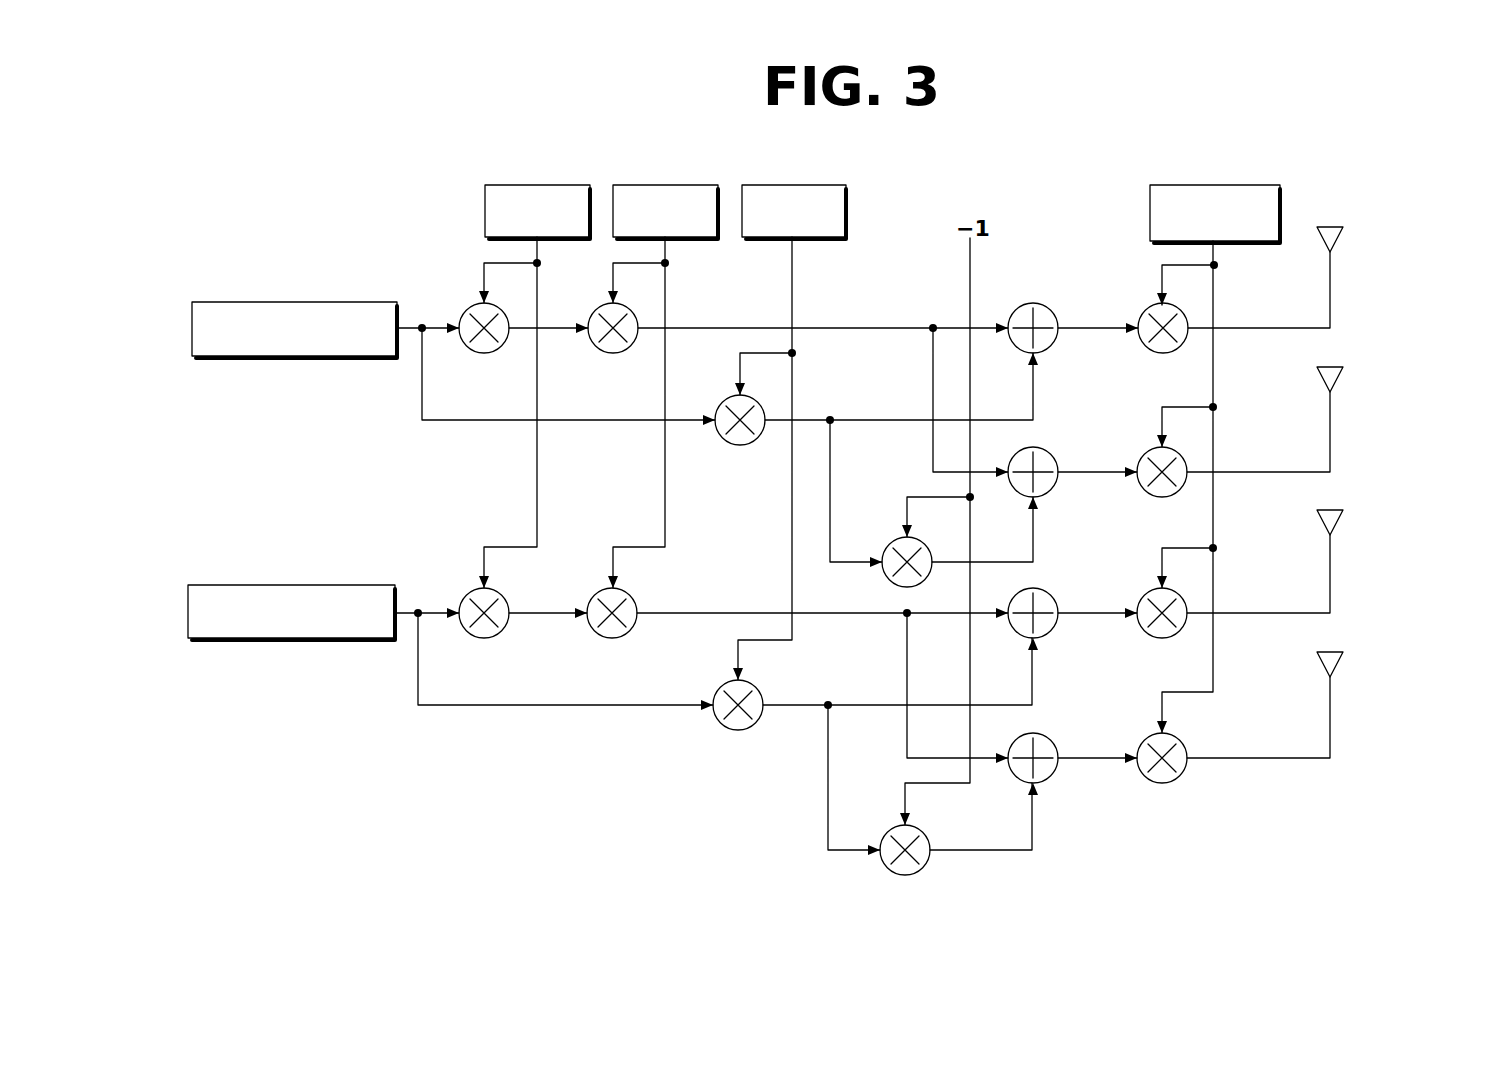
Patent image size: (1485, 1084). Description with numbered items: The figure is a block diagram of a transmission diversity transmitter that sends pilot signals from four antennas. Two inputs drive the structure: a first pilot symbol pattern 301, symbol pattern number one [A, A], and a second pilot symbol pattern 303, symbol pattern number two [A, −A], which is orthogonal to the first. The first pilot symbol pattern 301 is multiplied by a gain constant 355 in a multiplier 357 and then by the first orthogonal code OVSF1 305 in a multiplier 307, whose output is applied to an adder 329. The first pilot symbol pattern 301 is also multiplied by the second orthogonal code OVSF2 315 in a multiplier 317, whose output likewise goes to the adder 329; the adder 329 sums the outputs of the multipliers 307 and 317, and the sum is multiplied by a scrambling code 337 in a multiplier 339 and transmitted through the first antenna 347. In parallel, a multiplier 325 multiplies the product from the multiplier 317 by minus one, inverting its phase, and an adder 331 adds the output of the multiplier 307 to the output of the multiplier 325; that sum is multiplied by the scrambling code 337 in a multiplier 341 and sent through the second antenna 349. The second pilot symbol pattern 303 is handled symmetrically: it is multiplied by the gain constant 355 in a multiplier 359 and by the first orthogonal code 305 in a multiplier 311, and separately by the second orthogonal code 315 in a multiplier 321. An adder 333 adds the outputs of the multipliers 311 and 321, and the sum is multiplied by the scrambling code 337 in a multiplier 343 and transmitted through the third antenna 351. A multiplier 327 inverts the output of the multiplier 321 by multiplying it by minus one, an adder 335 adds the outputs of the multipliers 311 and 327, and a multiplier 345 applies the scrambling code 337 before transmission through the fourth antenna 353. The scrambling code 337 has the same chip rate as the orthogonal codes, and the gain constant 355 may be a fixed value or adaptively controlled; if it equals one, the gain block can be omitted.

The first pilot symbol pattern 301 is at (293, 302).
The second pilot symbol pattern 303 is at (288, 584).
The OVSF1 orthogonal code 305 is at (665, 184).
The multiplier 307 is at (594, 309).
The multiplier 311 is at (594, 594).
The OVSF2 orthogonal code 315 is at (793, 184).
The multiplier 317 is at (722, 401).
The multiplier 321 is at (720, 687).
The multiplier 325 is at (887, 544).
The multiplier 327 is at (886, 832).
The adder 329 is at (1053, 309).
The adder 331 is at (1055, 452).
The adder 333 is at (1053, 594).
The adder 335 is at (1053, 738).
The scrambling code 337 is at (1214, 184).
The multiplier 339 is at (1143, 309).
The multiplier 341 is at (1143, 452).
The multiplier 343 is at (1141, 594).
The multiplier 345 is at (1141, 738).
The first antenna 347 is at (1337, 227).
The second antenna 349 is at (1338, 367).
The third antenna 351 is at (1338, 508).
The fourth antenna 353 is at (1337, 650).
The gain constant 355 is at (537, 184).
The multiplier 357 is at (466, 309).
The multiplier 359 is at (466, 594).